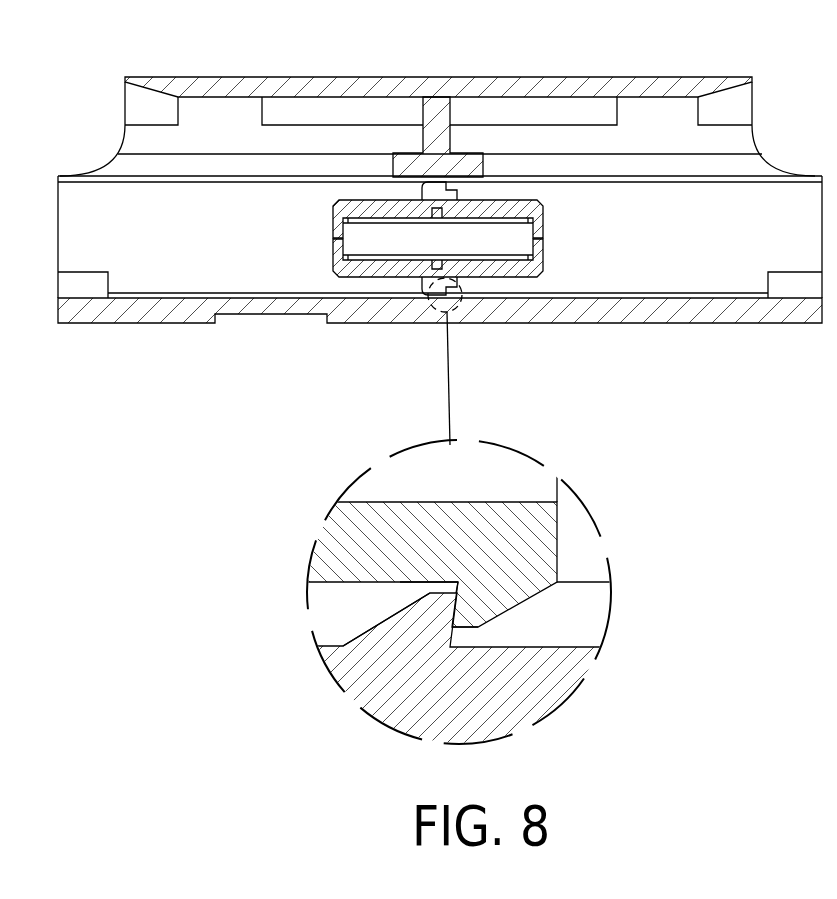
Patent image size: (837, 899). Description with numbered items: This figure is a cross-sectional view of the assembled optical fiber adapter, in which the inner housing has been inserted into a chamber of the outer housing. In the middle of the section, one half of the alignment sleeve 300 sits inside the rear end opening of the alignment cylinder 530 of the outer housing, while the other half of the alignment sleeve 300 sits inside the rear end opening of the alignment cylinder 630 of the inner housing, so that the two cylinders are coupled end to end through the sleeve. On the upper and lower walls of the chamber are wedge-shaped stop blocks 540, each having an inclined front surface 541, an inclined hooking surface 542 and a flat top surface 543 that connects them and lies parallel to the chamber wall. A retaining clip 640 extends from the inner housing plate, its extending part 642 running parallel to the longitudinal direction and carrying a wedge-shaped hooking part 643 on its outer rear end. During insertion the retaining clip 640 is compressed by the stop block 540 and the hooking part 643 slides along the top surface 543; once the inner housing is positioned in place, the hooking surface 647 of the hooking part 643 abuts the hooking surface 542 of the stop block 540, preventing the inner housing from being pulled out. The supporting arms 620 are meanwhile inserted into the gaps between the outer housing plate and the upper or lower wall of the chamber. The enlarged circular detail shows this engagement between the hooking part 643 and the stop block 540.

The alignment sleeve 300 is at (510, 240).
The alignment cylinder 530 is at (511, 205).
The alignment cylinder 630 is at (382, 205).
The wedge-shaped stop block 540 is at (445, 192).
The front surface 541 is at (392, 615).
The hooking surface 542 is at (455, 636).
The top surface 543 is at (458, 588).
The supporting arm 620 is at (452, 186).
The retaining clip 640 is at (436, 186).
The extending part 642 is at (495, 538).
The hooking part 643 is at (483, 601).
The hooking surface 647 is at (440, 580).